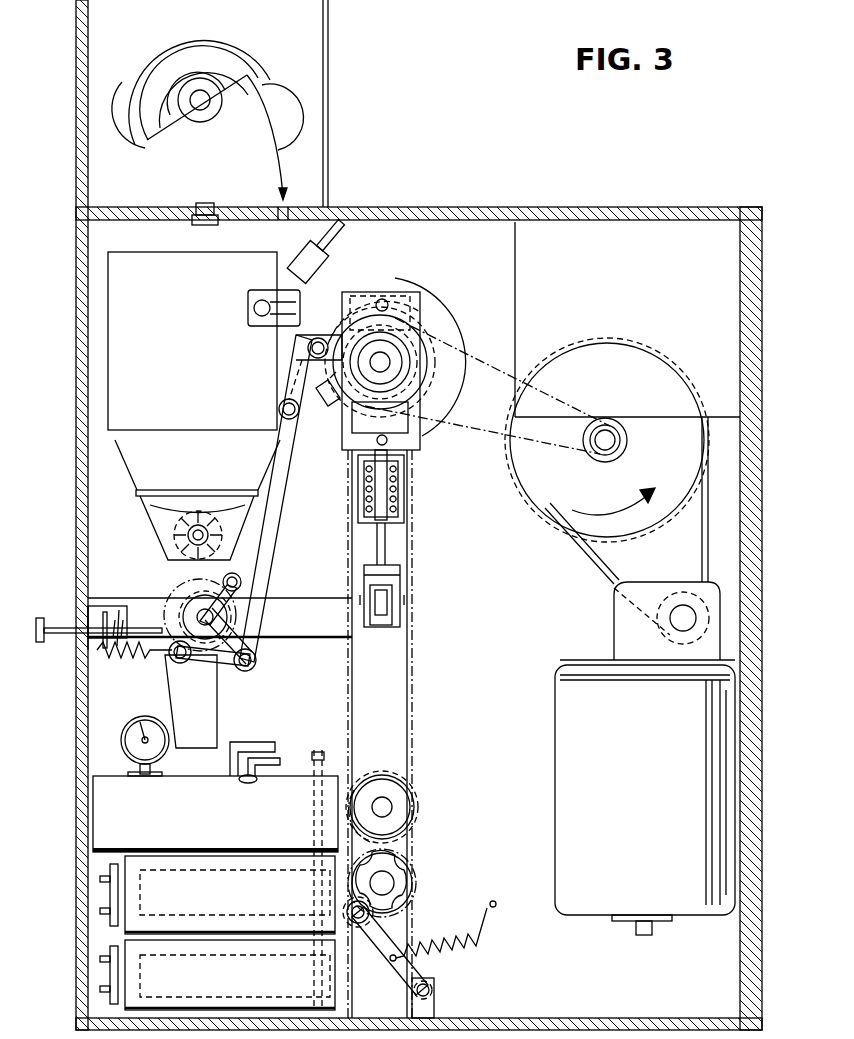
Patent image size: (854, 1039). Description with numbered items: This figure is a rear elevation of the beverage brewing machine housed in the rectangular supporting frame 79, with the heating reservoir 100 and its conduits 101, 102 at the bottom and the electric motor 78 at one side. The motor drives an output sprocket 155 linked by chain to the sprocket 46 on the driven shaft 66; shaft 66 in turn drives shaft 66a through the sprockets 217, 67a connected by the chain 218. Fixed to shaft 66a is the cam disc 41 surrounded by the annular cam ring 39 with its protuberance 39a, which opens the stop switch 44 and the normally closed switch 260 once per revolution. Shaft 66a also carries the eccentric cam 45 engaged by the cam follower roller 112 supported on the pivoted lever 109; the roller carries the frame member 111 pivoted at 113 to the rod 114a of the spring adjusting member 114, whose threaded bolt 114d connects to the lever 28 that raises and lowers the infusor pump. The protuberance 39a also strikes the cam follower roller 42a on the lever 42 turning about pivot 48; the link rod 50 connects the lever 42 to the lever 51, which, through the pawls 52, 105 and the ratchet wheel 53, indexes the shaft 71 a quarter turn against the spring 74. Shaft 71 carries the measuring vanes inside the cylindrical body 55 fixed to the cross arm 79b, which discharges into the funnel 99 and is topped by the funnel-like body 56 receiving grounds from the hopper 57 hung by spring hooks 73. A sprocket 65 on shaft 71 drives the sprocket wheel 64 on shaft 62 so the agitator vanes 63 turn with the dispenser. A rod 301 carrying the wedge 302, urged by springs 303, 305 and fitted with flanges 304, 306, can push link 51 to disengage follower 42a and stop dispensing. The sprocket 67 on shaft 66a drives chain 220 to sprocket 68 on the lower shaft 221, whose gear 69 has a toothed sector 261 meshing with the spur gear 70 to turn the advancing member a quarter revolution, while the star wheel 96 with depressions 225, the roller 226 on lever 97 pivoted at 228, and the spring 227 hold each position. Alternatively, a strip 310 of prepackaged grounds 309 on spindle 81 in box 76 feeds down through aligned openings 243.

The lever 28 is at (385, 612).
The annular cam ring 39 is at (422, 380).
The protuberance 39a is at (358, 312).
The cam disc 41 is at (415, 348).
The lever 42 is at (280, 468).
The cam follower roller 42a is at (296, 350).
The switch 44 is at (320, 258).
The cam 45 is at (448, 312).
The sprocket 46 is at (690, 382).
The pivot 48 is at (282, 414).
The link rod 50 is at (218, 670).
The lever 51 is at (235, 635).
The pawl 52 is at (182, 607).
The ratchet wheel 53 is at (200, 610).
The cylindrical body 55 is at (242, 585).
The funnel-like body 56 is at (148, 517).
The hopper 57 is at (196, 356).
The shaft 62 is at (198, 522).
The agitator vanes 63 is at (182, 522).
The sprocket wheel 64 is at (212, 520).
The sprocket 65 is at (257, 655).
The driven shaft 66 is at (608, 432).
The shaft 66a is at (385, 358).
The sprocket 67 is at (308, 352).
The sprocket 67a is at (296, 372).
The sprocket 68 is at (410, 785).
The gear 69 is at (415, 790).
The spur gear 70 is at (408, 841).
The shaft 71 is at (182, 592).
The spring hooks 73 is at (205, 203).
The spring 74 is at (130, 660).
The box 76 is at (328, 88).
The electric motor 78 is at (638, 854).
The supporting frame 79 is at (745, 975).
The cross arm 79b is at (334, 610).
The spindle 81 is at (204, 110).
The star wheel 96 is at (412, 883).
The lever 97 is at (382, 952).
The discharge funnel 99 is at (217, 712).
The heating reservoir 100 is at (196, 810).
The conduit 101 is at (258, 742).
The conduit 102 is at (270, 760).
The pawl 105 is at (232, 578).
The pivoted lever 109 is at (270, 300).
The frame member 111 is at (420, 438).
The cam follower roller 112 is at (390, 308).
The pivot 113 is at (386, 430).
The spring adjusting member 114 is at (400, 486).
The rod 114a is at (400, 465).
The threaded bolt 114d is at (386, 542).
The output sprocket 155 is at (660, 636).
The sprocket 217 is at (628, 442).
The chain 218 is at (556, 400).
The chain 220 is at (415, 700).
The lower shaft 221 is at (384, 797).
The depressions 225 is at (400, 866).
The roller 226 is at (340, 914).
The spring 227 is at (440, 940).
The pivot 228 is at (434, 988).
The aligned openings 243 is at (280, 205).
The switch 260 is at (326, 408).
The partial peripheral sector 261 is at (314, 818).
The rod 301 is at (52, 636).
The wedge 302 is at (64, 620).
The spring 303 is at (80, 606).
The flange 304 is at (105, 612).
The spring 305 is at (118, 610).
The flange 306 is at (198, 658).
The prepackaged grounds 309 is at (252, 40).
The strip 310 is at (258, 80).